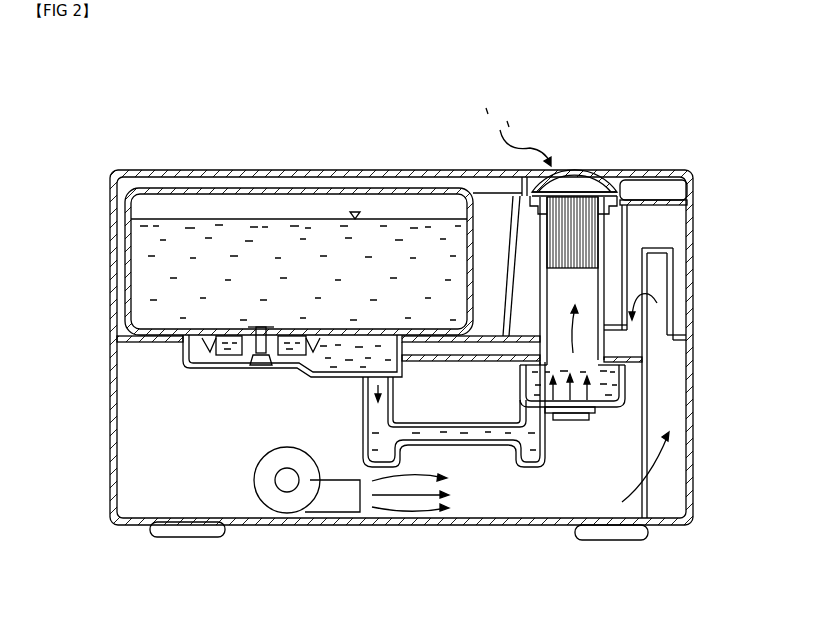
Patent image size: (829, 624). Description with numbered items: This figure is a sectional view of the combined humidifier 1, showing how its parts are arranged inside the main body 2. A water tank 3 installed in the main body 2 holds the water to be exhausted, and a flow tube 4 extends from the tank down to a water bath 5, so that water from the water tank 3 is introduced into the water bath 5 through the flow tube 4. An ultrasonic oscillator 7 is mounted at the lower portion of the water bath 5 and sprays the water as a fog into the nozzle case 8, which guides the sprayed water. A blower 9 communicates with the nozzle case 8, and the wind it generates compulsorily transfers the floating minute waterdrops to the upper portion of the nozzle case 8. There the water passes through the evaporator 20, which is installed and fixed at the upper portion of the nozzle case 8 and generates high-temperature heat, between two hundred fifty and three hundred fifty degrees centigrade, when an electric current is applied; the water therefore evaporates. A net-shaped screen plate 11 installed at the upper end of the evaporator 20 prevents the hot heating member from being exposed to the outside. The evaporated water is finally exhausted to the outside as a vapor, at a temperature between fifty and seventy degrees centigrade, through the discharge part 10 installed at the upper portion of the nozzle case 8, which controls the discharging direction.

The humidifier 1 is at (390, 160).
The main body 2 is at (112, 340).
The water tank 3 is at (214, 190).
The flow tube 4 is at (475, 438).
The water bath 5 is at (617, 385).
The ultrasonic oscillator 7 is at (577, 418).
The nozzle case 8 is at (658, 281).
The blower 9 is at (323, 503).
The discharge part 10 is at (585, 168).
The net-shaped screen plate 11 is at (565, 197).
The evaporator 20 is at (592, 224).